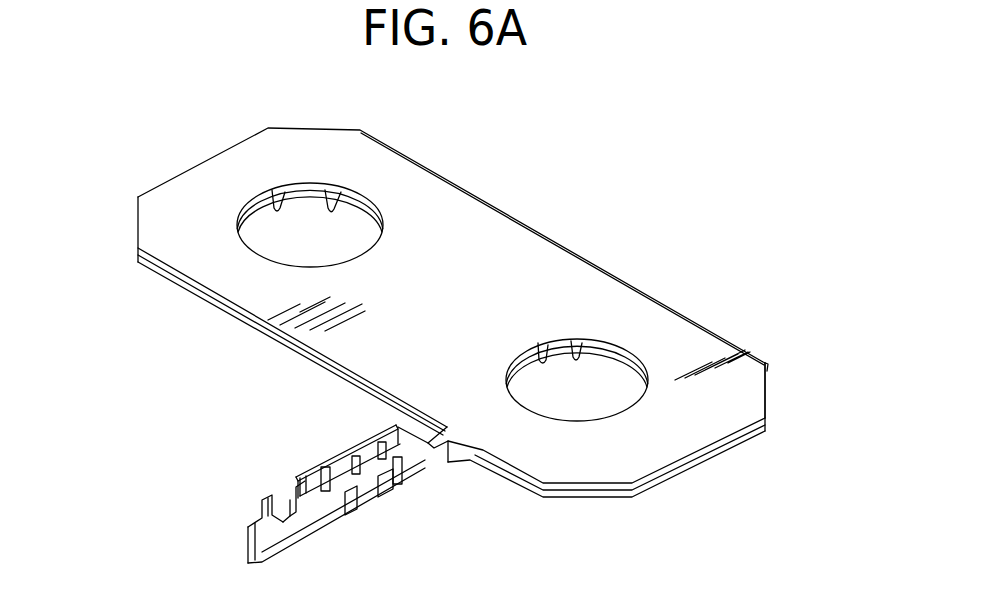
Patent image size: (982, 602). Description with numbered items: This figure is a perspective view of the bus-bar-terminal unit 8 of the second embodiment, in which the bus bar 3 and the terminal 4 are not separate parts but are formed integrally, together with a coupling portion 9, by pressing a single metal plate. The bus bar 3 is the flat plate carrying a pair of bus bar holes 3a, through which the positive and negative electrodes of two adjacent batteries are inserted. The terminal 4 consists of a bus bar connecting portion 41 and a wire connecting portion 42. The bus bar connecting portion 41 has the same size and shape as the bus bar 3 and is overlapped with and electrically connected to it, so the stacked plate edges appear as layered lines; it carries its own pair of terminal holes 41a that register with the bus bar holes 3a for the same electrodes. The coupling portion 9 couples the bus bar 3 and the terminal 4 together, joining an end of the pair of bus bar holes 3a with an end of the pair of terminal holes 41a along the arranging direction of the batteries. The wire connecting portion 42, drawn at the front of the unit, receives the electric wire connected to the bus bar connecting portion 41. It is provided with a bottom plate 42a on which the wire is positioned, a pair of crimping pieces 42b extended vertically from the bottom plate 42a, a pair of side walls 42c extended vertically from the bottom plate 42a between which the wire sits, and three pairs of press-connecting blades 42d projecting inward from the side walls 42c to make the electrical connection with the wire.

The bus bar 3 is at (722, 455).
The bus bar holes 3a is at (272, 192).
The terminal 4 is at (667, 533).
The bus-bar-terminal unit 8 is at (660, 250).
The coupling portion 9 is at (770, 366).
The bus bar connecting portion 41 is at (643, 467).
The terminal holes 41a is at (343, 192).
The wire connecting portion 42 is at (328, 537).
The bottom plate 42a is at (247, 557).
The crimping pieces 42b is at (292, 514).
The side walls 42c is at (290, 490).
The press-connecting blades 42d is at (382, 443).